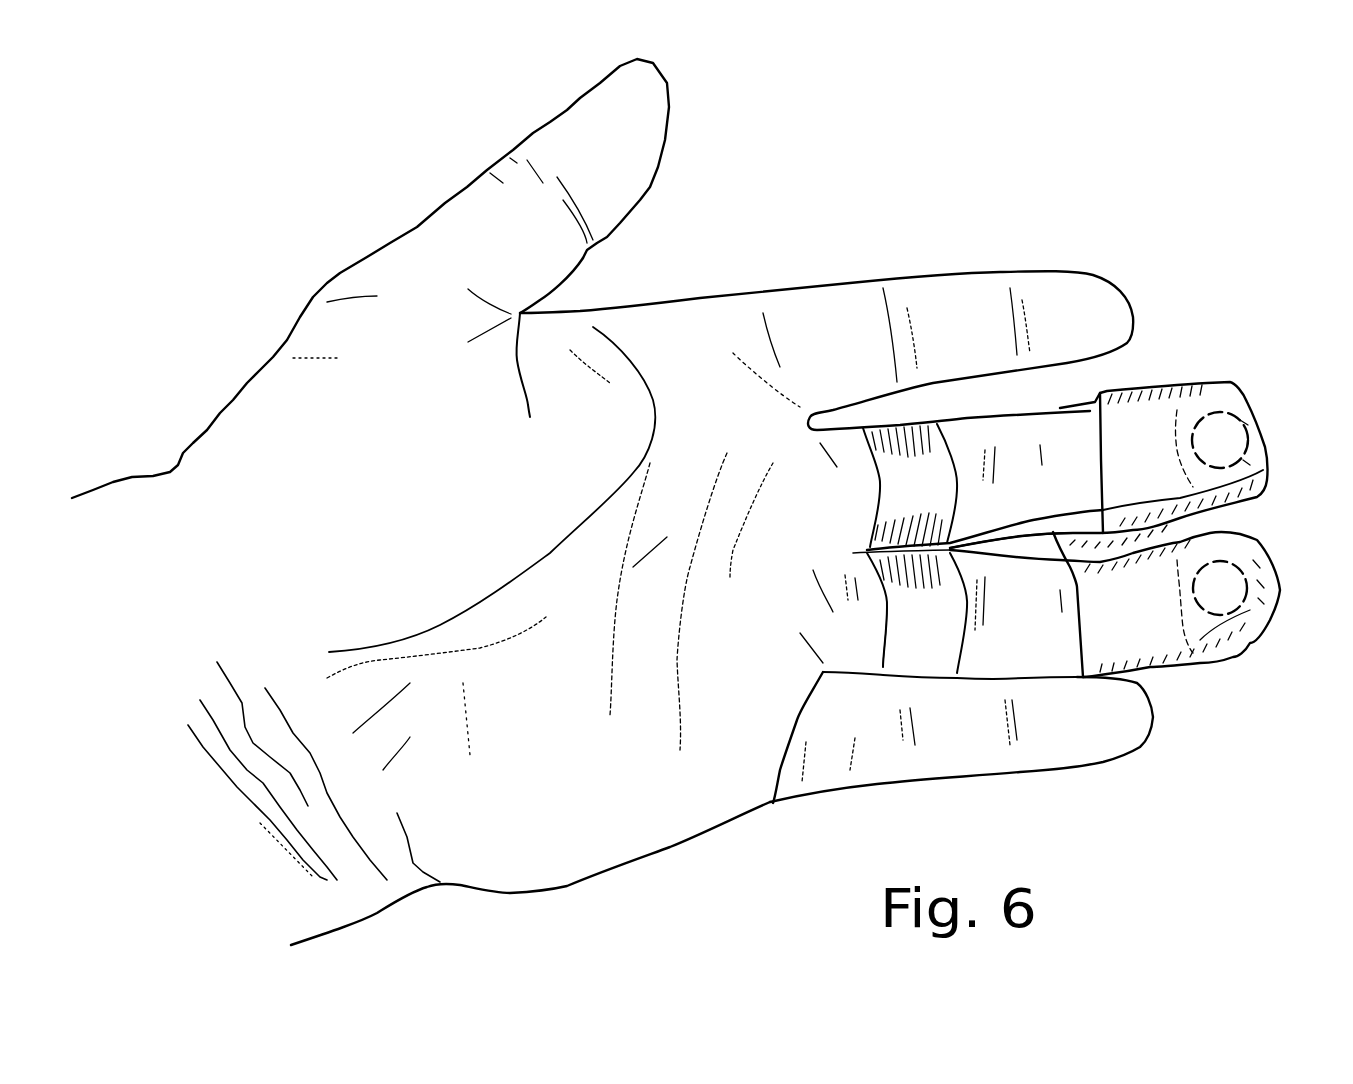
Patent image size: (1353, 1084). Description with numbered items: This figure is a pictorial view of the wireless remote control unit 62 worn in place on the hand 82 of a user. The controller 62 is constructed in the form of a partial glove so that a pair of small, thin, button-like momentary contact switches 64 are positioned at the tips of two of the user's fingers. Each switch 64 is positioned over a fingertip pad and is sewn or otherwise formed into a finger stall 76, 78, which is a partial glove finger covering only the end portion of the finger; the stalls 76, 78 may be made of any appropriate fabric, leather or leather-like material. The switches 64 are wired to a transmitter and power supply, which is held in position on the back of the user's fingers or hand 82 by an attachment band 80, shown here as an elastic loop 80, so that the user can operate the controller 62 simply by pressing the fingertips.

The hand 82 is at (774, 232).
The wireless remote control unit 62 is at (1263, 357).
The momentary contact switches 64 is at (1223, 438).
The finger stall 76 is at (1157, 410).
The finger stall 78 is at (1135, 633).
The attachment band 80 is at (933, 641).